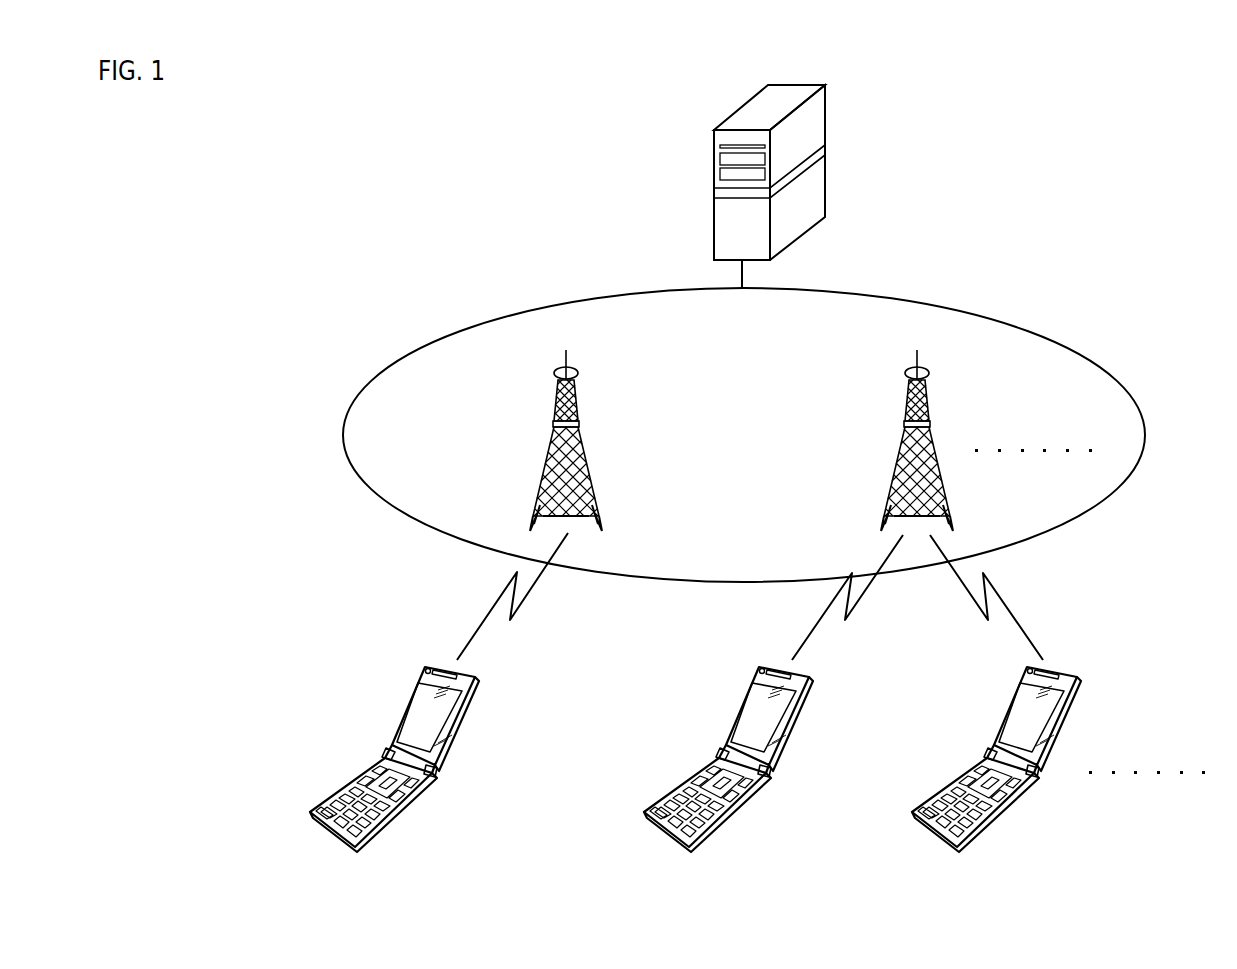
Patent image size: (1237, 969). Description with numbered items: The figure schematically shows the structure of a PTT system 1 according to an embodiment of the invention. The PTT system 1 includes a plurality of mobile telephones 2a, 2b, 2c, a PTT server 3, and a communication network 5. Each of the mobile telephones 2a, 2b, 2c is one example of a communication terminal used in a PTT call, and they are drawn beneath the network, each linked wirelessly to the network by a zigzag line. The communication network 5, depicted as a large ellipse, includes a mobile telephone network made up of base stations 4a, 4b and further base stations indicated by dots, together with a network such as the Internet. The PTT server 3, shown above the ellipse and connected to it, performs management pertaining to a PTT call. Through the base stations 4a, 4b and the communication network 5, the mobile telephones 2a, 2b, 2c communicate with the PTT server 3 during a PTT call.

The PTT system 1 is at (1109, 140).
The mobile telephone 2a is at (477, 678).
The mobile telephone 2b is at (748, 744).
The mobile telephone 2c is at (1015, 744).
The PTT server 3 is at (826, 113).
The base station 4a is at (578, 420).
The base station 4b is at (927, 440).
The communication network 5 is at (990, 317).